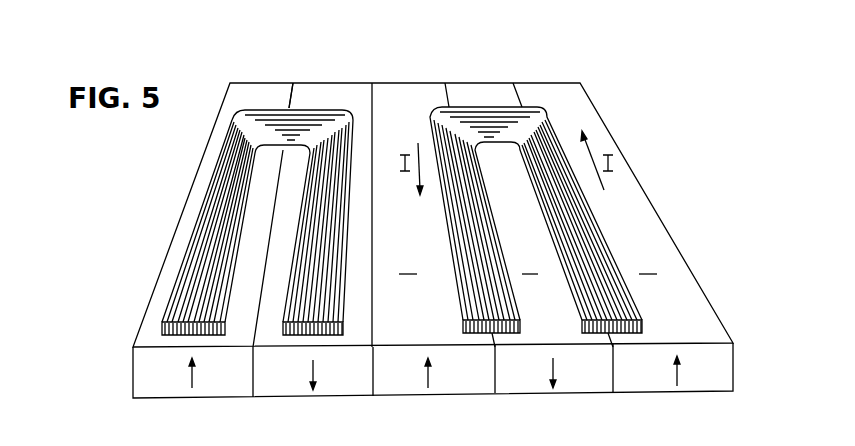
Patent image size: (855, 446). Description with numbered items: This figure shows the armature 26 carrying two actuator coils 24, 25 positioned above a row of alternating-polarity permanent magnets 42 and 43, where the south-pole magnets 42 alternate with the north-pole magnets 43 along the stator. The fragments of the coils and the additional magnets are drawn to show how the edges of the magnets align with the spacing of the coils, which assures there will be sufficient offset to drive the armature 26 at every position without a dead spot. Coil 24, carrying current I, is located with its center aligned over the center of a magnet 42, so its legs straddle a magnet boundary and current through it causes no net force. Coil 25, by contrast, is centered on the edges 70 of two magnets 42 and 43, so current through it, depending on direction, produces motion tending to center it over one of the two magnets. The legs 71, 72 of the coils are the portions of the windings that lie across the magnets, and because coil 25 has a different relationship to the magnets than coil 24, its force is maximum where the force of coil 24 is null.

The armature 26 is at (602, 93).
The actuator coil 24 is at (593, 216).
The actuator coil 25 is at (263, 191).
The edges of magnets 70 is at (294, 97).
The coil leg 71 is at (190, 268).
The coil leg 72 is at (350, 145).
The permanent magnet 43 is at (178, 393).
The permanent magnet 42 is at (290, 393).